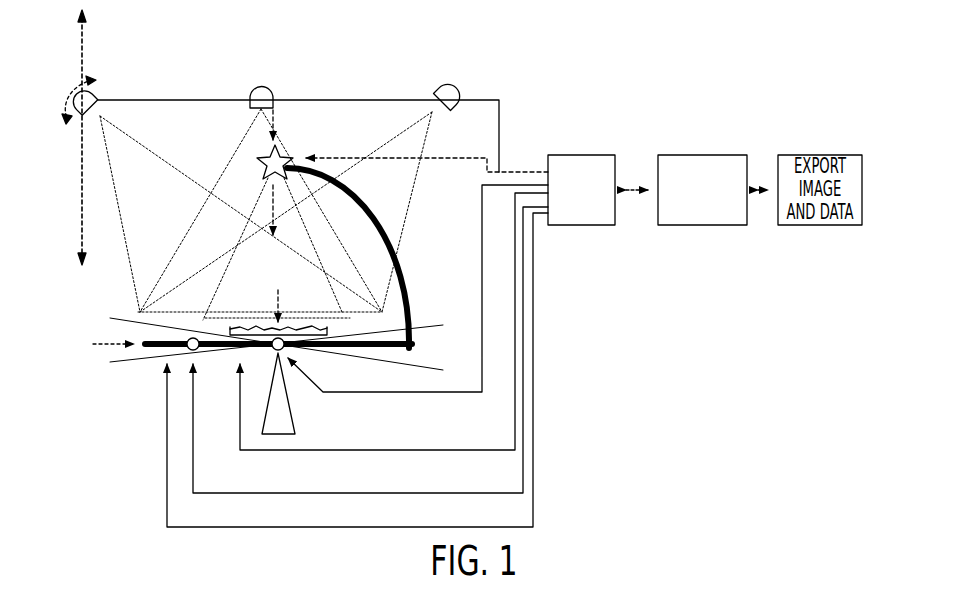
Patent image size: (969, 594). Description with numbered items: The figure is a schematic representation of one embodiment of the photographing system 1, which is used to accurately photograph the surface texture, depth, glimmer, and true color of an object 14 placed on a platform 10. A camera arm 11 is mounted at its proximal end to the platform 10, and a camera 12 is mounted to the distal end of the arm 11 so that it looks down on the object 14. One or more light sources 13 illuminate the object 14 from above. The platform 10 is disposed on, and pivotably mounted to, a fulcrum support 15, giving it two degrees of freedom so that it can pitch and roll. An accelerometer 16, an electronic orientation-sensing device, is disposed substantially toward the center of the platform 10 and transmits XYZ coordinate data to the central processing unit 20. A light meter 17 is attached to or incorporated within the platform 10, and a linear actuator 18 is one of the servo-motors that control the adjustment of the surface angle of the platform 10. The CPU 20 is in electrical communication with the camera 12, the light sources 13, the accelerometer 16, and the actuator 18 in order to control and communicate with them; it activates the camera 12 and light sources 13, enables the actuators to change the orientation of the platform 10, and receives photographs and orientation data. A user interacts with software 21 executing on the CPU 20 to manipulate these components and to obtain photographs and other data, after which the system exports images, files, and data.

The photographing system 1 is at (588, 72).
The platform 10 is at (100, 350).
The camera arm 11 is at (407, 271).
The camera 12 is at (280, 160).
The light sources 13 is at (261, 96).
The object 14 is at (276, 300).
The fulcrum support 15 is at (296, 418).
The accelerometer 16 is at (448, 394).
The light meter 17 is at (191, 455).
The linear actuator 18 is at (165, 493).
The central processing unit 20 is at (585, 154).
The software 21 is at (700, 154).